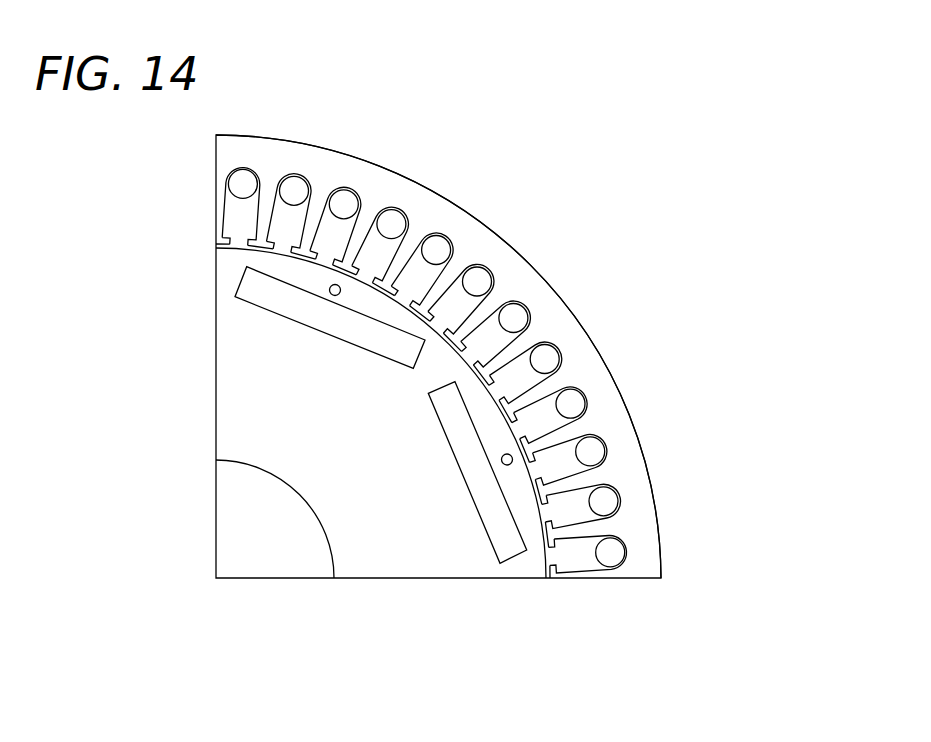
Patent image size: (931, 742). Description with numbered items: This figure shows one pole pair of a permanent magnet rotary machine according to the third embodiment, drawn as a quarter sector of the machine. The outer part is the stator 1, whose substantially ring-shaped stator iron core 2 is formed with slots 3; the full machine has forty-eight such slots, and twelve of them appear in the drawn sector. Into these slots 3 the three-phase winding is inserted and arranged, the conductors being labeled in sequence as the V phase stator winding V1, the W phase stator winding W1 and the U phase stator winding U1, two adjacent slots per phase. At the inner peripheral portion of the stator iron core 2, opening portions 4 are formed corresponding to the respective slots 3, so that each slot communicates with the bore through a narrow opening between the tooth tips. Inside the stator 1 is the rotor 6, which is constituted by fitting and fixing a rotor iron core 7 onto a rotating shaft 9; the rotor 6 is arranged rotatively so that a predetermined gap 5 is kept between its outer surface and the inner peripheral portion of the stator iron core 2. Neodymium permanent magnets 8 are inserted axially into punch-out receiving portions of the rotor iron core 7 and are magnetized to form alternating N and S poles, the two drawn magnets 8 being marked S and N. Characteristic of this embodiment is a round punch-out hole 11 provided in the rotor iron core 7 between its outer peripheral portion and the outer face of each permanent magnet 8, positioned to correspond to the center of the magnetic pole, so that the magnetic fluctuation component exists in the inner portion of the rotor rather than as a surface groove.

The stator 1 is at (650, 565).
The stator iron core 2 is at (603, 577).
The slots 3 is at (570, 557).
The opening portions 4 is at (607, 490).
The gap 5 is at (612, 365).
The rotor 6 is at (232, 284).
The rotor iron core 7 is at (236, 365).
The permanent magnets 8 is at (302, 312).
The rotating shaft 9 is at (257, 518).
The round shape punch-out hole 11 is at (336, 296).
The V phase stator winding V1 is at (290, 190).
The W phase stator winding W1 is at (392, 222).
The U phase stator winding U1 is at (478, 281).